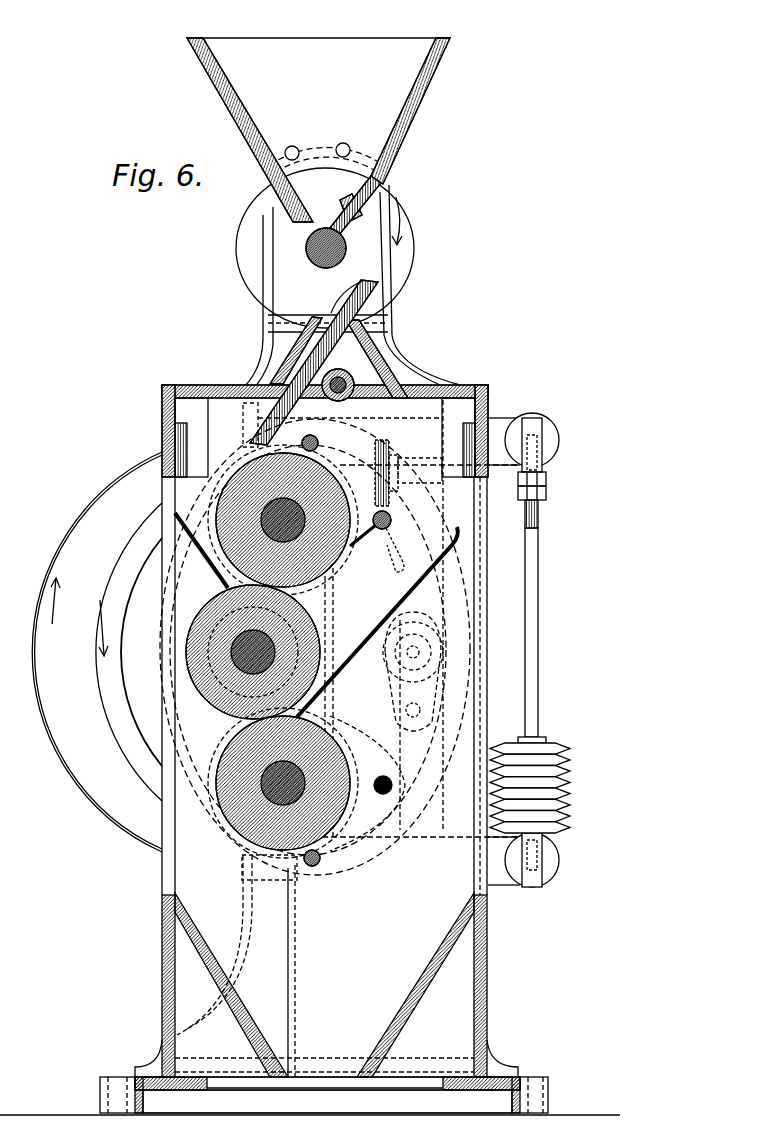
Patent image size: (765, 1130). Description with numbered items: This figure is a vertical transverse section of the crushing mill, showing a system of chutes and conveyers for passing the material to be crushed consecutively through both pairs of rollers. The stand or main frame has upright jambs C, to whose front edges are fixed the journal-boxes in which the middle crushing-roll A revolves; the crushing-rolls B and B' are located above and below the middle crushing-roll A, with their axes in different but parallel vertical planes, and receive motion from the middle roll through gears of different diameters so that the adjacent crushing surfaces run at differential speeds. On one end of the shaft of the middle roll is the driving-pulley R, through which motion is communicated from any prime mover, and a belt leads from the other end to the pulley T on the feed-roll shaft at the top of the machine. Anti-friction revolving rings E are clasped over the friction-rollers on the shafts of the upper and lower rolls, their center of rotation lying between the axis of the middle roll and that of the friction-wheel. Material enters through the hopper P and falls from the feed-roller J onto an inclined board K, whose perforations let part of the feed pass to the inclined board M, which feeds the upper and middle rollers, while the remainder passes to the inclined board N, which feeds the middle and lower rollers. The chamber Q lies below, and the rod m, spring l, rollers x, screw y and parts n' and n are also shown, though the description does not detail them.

The hopper P is at (318, 130).
The feed-roller J is at (334, 222).
The pulley on the feed-roll shaft T is at (336, 235).
The upright jambs C is at (310, 650).
The inclined board K is at (310, 363).
The lower chamber Q is at (324, 966).
The driving-pulley R is at (97, 652).
The anti-friction revolving rings E is at (129, 652).
The crushing-roll B is at (283, 520).
The middle crushing-roll A is at (253, 652).
The crushing-roll B' is at (306, 783).
The inclined board M is at (201, 550).
The inclined board N is at (377, 614).
The guide roller x is at (319, 646).
The adjusting screw y is at (386, 464).
The stop block n' is at (370, 450).
The guide bar n is at (404, 743).
The rod m is at (524, 650).
The spring l is at (538, 785).